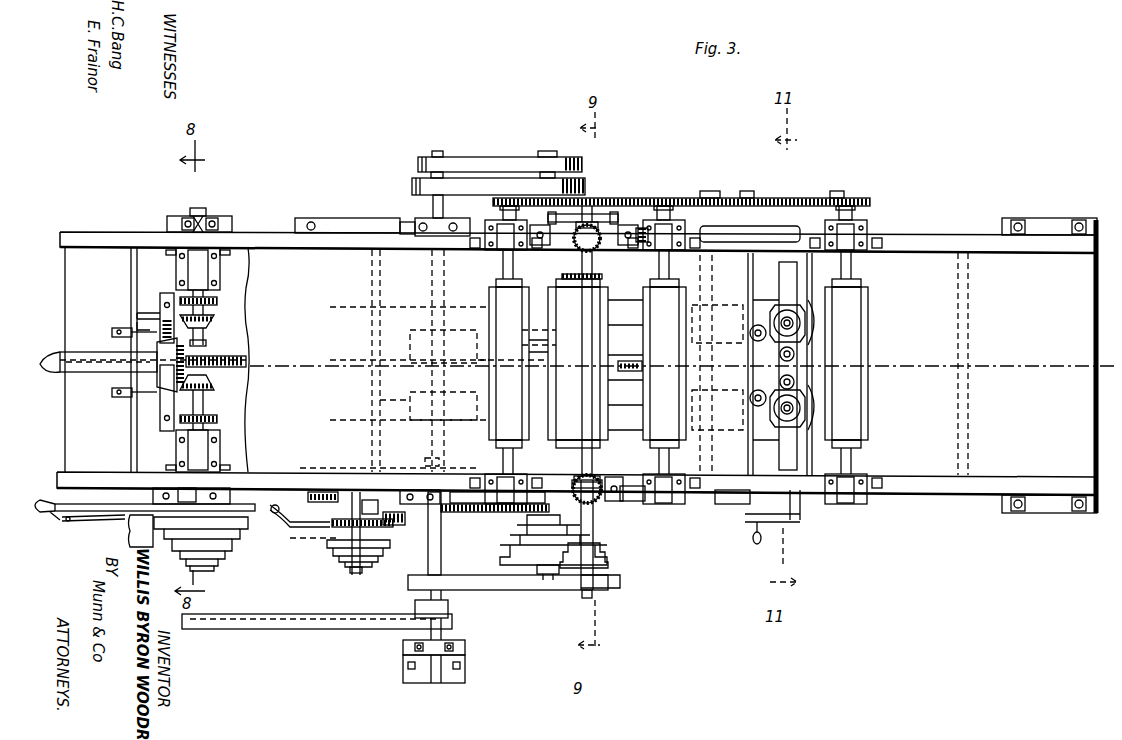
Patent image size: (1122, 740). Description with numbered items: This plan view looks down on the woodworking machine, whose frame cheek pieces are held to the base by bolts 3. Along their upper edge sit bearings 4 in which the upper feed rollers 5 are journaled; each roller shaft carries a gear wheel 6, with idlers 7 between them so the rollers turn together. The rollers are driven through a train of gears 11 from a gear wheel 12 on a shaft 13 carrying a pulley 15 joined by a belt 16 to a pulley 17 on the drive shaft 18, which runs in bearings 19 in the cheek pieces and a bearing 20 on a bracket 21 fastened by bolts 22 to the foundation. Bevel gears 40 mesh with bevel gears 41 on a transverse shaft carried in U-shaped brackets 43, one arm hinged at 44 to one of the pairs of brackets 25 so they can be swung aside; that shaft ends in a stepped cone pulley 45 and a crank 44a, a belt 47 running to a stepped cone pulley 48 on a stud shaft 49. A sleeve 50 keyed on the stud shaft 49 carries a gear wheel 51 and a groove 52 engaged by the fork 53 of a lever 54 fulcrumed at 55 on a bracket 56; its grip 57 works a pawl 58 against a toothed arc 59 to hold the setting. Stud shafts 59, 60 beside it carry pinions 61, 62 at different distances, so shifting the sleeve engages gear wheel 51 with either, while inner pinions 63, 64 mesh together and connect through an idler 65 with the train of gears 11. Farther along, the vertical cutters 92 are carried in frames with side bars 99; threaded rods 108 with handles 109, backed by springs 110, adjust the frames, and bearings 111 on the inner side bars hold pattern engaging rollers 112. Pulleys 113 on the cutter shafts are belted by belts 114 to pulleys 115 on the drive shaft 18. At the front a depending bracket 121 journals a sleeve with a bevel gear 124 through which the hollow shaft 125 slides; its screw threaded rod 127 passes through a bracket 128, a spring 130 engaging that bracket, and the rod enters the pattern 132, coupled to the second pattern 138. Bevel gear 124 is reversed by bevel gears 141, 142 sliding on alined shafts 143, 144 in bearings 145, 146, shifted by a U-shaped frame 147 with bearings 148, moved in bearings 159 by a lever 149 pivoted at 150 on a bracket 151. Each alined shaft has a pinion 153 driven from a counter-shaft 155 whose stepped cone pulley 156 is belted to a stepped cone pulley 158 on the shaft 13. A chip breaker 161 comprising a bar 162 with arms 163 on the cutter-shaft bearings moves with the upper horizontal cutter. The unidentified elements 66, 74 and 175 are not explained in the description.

The bolts 3 is at (330, 218).
The bearings 4 is at (480, 247).
The upper feed rollers 5 is at (678, 362).
The gear wheels 6 is at (498, 204).
The idlers 7 is at (746, 203).
The train of gears 11 is at (443, 518).
The gear wheel 12 is at (582, 521).
The shaft 13 is at (546, 576).
The pulley 15 is at (567, 168).
The belt 16 is at (513, 162).
The pulley 17 is at (447, 165).
The drive shaft 18 is at (434, 155).
The bearings 19 is at (420, 240).
The bearing 20 is at (452, 641).
The bracket 21 is at (403, 648).
The bolts 22 is at (403, 666).
The brackets 25 is at (622, 205).
The bevel gears 40 is at (580, 252).
The bevel gears 41 is at (618, 484).
The U-shaped brackets 43 is at (552, 218).
The hinge 44 is at (655, 250).
The crank 44a is at (620, 582).
The stepped cone pulley 45 is at (608, 558).
The belt 47 is at (388, 548).
The stepped cone pulley 48 is at (365, 570).
The stud shaft 49 is at (356, 500).
The sleeve 50 is at (338, 553).
The gear wheel 51 is at (380, 527).
The groove 52 is at (326, 506).
The fork 53 is at (340, 547).
The lever 54 is at (296, 520).
The fulcrum 55 is at (230, 497).
The bracket 56 is at (290, 502).
The grip 57 is at (60, 523).
The pawl 58 is at (120, 522).
The toothed arc 59 is at (128, 504).
The stud shaft 60 is at (348, 470).
The pinion 61 is at (408, 521).
The pinion 62 is at (325, 500).
The pinion 63 is at (406, 469).
The pinion 64 is at (310, 470).
The idler 65 is at (430, 450).
The bracket 66 is at (735, 241).
The belts 74 is at (525, 330).
The vertical cutters 92 is at (800, 308).
The side bars 99 is at (800, 346).
The threaded rods 108 is at (802, 519).
The handles 109 is at (761, 542).
The springs 110 is at (775, 371).
The bearings 111 is at (800, 380).
The pattern engaging rollers 112 is at (800, 355).
The pulleys 113 is at (762, 320).
The belts 114 is at (730, 445).
The pulleys 115 is at (409, 361).
The depending bracket 121 is at (138, 300).
The bevel gear 124 is at (112, 393).
The hollow shaft 125 is at (112, 333).
The screw threaded rod 127 is at (246, 358).
The bracket 128 is at (340, 384).
The spring 130 is at (215, 384).
The pattern 132 is at (548, 360).
The pattern 138 is at (642, 366).
The bevel gear 141 is at (215, 331).
The bevel gear 142 is at (215, 410).
The alined shaft 143 is at (203, 410).
The alined shaft 144 is at (190, 216).
The bearing 145 is at (220, 444).
The bearing 146 is at (220, 274).
The U-shaped frame 147 is at (133, 301).
The bearings 148 is at (215, 318).
The lever 149 is at (95, 413).
The pivot 150 is at (98, 361).
The bracket 151 is at (98, 271).
The pinion 153 is at (217, 300).
The counter-shaft 155 is at (203, 214).
The stepped cone pulley 156 is at (214, 558).
The stepped cone pulley 158 is at (527, 562).
The bearings 159 is at (133, 318).
The chip breaker 161 is at (562, 274).
The bar 162 is at (594, 478).
The arms 163 is at (565, 276).
The dashed part 175 is at (418, 399).